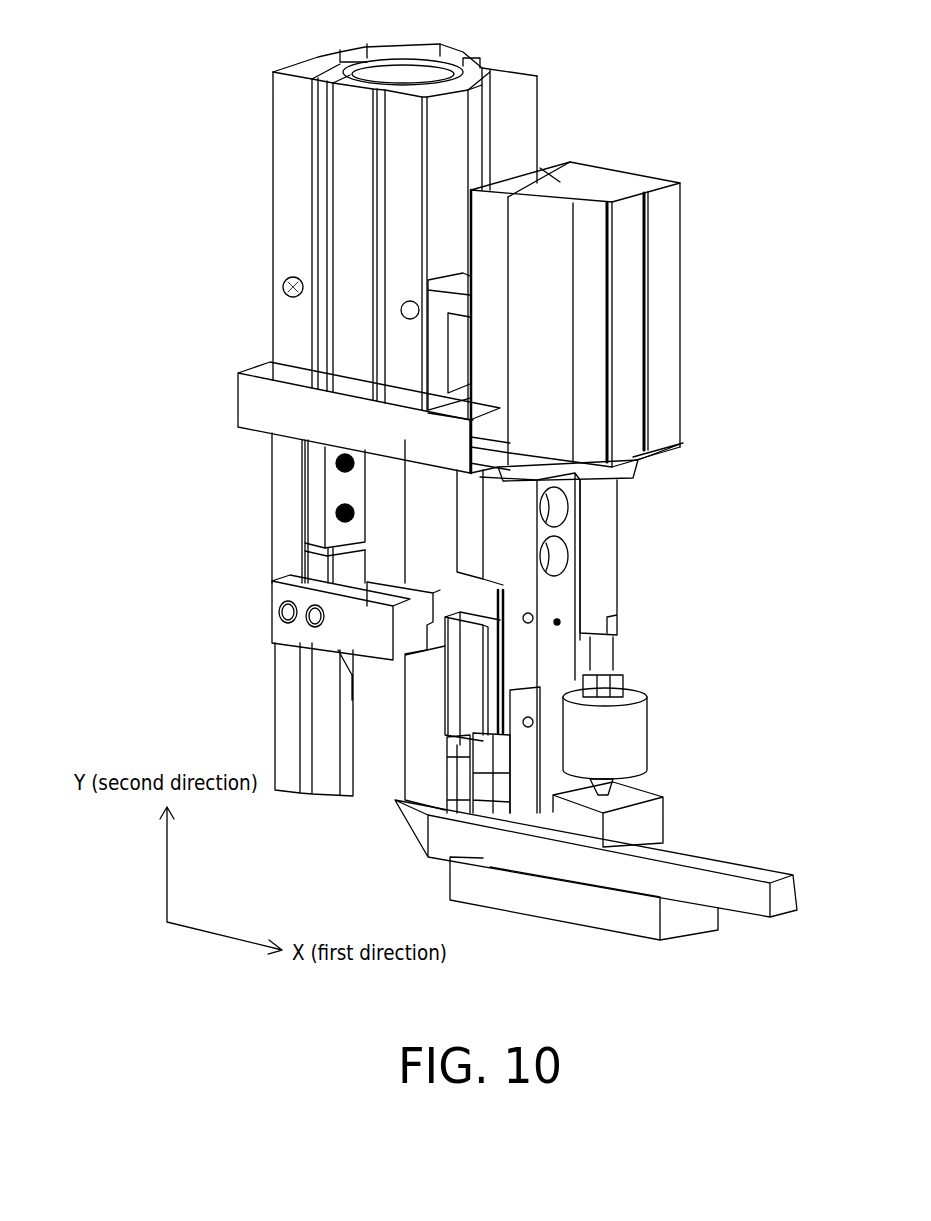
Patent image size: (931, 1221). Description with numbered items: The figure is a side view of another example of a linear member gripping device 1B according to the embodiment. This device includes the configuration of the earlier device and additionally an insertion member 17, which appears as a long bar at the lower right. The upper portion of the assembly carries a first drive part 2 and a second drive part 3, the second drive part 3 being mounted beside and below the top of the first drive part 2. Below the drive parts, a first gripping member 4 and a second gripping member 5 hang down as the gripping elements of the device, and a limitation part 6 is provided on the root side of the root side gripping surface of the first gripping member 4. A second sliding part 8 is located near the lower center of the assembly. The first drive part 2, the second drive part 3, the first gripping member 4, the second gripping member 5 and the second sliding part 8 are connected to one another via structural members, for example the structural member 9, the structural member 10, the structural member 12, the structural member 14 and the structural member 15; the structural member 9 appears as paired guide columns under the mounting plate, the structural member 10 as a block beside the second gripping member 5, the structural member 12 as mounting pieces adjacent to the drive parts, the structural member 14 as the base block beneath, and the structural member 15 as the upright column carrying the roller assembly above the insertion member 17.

The linear member gripping device 1B is at (220, 51).
The first drive part 2 is at (470, 66).
The second drive part 3 is at (637, 172).
The first gripping member 4 is at (328, 790).
The second gripping member 5 is at (415, 727).
The limitation part 6 is at (386, 600).
The second sliding part 8 is at (487, 800).
The structural member 9 is at (362, 484).
The structural member 10 is at (444, 683).
The structural member 12 is at (455, 278).
The structural member 14 is at (465, 865).
The structural member 15 is at (540, 800).
The insertion member 17 is at (755, 905).